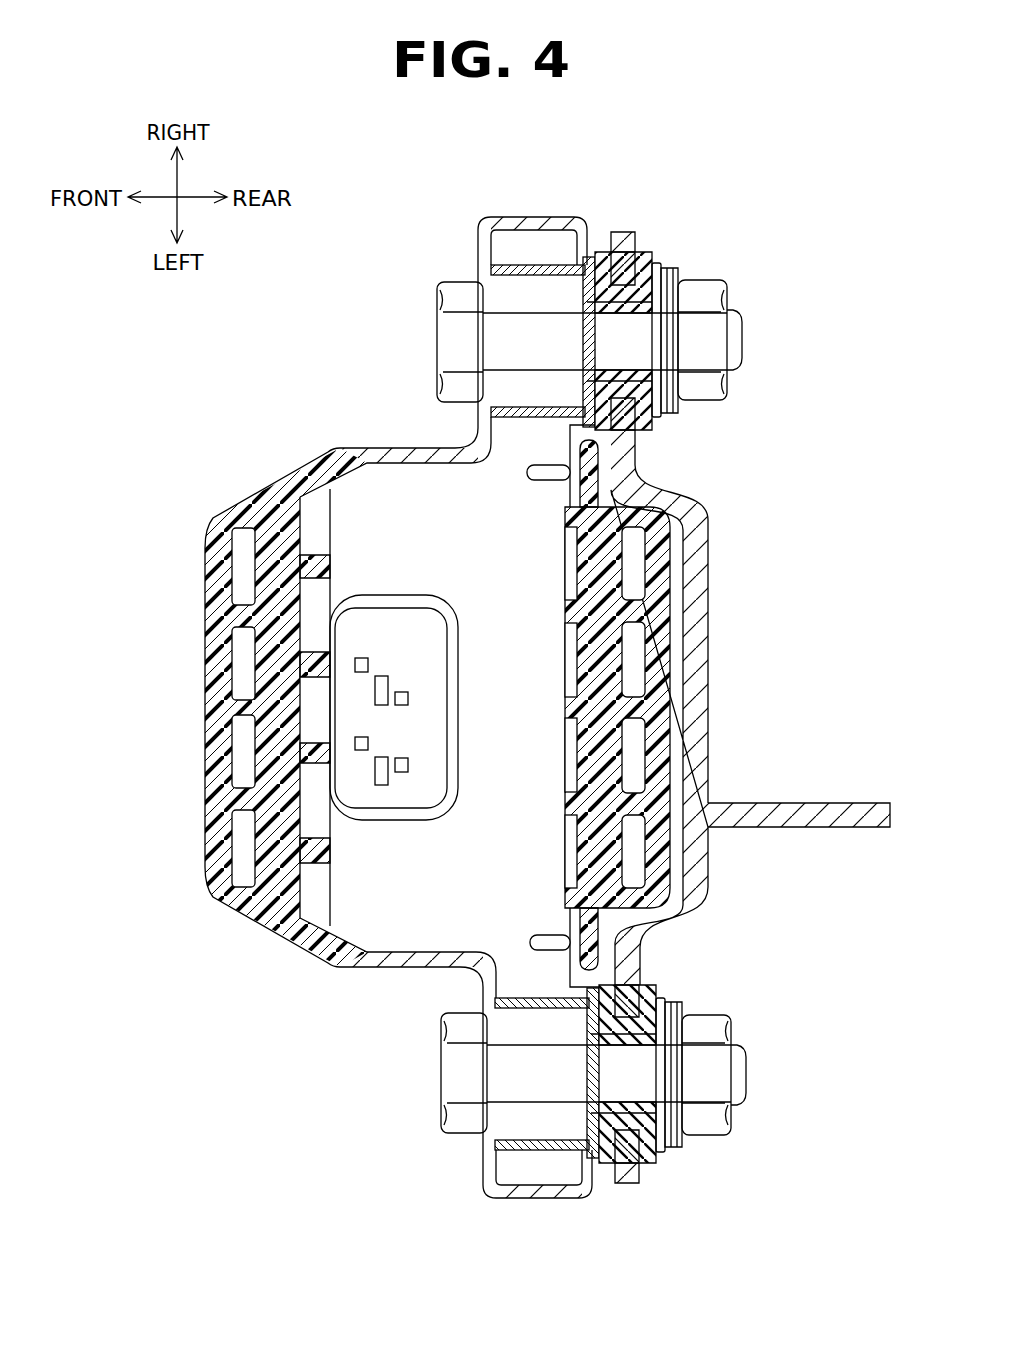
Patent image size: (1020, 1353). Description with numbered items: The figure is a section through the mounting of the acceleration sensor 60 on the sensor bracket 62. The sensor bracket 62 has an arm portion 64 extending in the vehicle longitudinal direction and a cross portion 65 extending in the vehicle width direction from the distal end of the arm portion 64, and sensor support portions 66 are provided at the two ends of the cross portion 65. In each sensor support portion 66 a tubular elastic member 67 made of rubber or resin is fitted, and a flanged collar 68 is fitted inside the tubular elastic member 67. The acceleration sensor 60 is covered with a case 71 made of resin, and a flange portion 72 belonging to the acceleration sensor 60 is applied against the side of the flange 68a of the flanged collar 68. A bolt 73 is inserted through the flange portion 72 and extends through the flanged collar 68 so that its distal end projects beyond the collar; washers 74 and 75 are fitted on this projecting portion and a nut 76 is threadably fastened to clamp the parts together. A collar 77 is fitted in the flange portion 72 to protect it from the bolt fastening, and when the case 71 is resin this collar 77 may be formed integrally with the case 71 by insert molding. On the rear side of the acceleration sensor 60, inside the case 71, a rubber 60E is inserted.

The acceleration sensor 60 is at (493, 719).
The rubber 60E is at (665, 690).
The sensor bracket 62 is at (750, 707).
The arm portion 64 is at (762, 827).
The cross portion 65 is at (710, 915).
The sensor support portion 66 is at (459, 252).
The tubular elastic member 67 is at (648, 252).
The flanged collar 68 is at (613, 362).
The flange 68a is at (590, 258).
The case 71 is at (262, 925).
The flange portion 72 is at (535, 248).
The bolt 73 is at (455, 341).
The washer 74 is at (663, 265).
The washer 75 is at (672, 275).
The nut 76 is at (700, 298).
The collar 77 is at (520, 430).